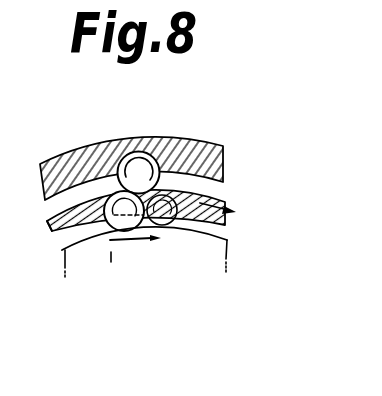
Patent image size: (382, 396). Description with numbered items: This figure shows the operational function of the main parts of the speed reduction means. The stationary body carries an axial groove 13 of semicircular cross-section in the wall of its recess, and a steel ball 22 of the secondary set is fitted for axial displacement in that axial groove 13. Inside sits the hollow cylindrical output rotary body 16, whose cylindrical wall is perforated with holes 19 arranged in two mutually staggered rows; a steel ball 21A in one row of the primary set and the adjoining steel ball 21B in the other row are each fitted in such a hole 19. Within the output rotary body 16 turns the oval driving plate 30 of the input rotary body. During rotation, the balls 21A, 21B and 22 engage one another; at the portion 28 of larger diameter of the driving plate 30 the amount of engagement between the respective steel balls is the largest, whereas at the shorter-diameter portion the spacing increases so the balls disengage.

The axial groove 13 is at (132, 151).
The output rotary body 16 is at (217, 198).
The hole 19 is at (68, 200).
The steel ball 22 is at (158, 158).
The steel ball 21A is at (113, 218).
The steel ball 21B is at (177, 229).
The portion of larger diameter 28 is at (113, 238).
The driving plate 30 is at (164, 282).